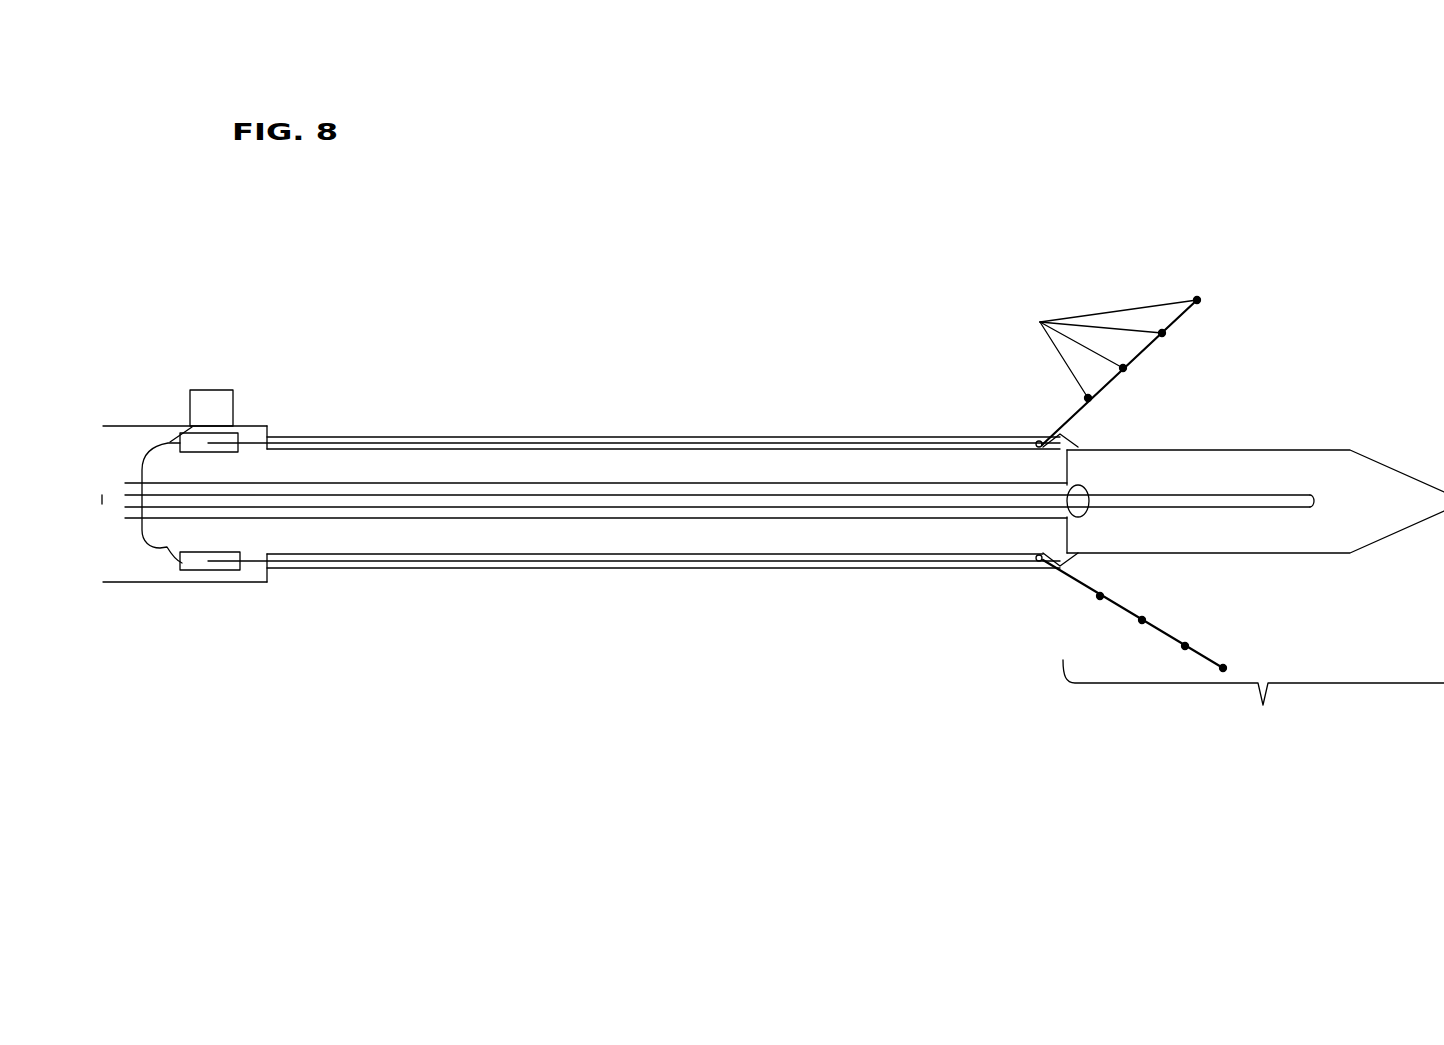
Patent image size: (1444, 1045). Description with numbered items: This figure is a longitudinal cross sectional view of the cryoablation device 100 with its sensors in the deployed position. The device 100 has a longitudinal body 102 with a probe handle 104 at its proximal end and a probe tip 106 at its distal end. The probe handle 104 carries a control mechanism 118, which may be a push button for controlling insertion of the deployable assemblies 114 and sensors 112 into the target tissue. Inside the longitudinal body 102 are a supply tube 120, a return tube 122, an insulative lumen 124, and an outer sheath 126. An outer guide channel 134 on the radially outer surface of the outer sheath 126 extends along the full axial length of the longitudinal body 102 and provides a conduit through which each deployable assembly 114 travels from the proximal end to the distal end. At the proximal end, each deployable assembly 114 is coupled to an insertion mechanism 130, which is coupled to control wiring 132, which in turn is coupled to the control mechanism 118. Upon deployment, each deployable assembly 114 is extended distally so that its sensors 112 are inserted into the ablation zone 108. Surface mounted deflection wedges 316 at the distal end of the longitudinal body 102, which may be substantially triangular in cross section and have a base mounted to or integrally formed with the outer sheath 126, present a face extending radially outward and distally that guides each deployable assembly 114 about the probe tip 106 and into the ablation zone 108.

The device 100 is at (642, 252).
The longitudinal body 102 is at (735, 405).
The probe handle 104 is at (130, 583).
The probe tip 106 is at (1327, 412).
The ablation zone 108 is at (1253, 701).
The sensors 112 is at (1095, 372).
The deployable assembly 114 is at (812, 438).
The control mechanism 118 is at (215, 408).
The supply tube 120 is at (1155, 497).
The return tube 122 is at (1048, 482).
The insulative lumen 124 is at (793, 527).
The outer sheath 126 is at (507, 547).
The insertion mechanism 130 is at (212, 573).
The control wiring 132 is at (162, 441).
The outer guide channel 134 is at (552, 438).
The surface mounted deflection wedge 316 is at (1062, 560).